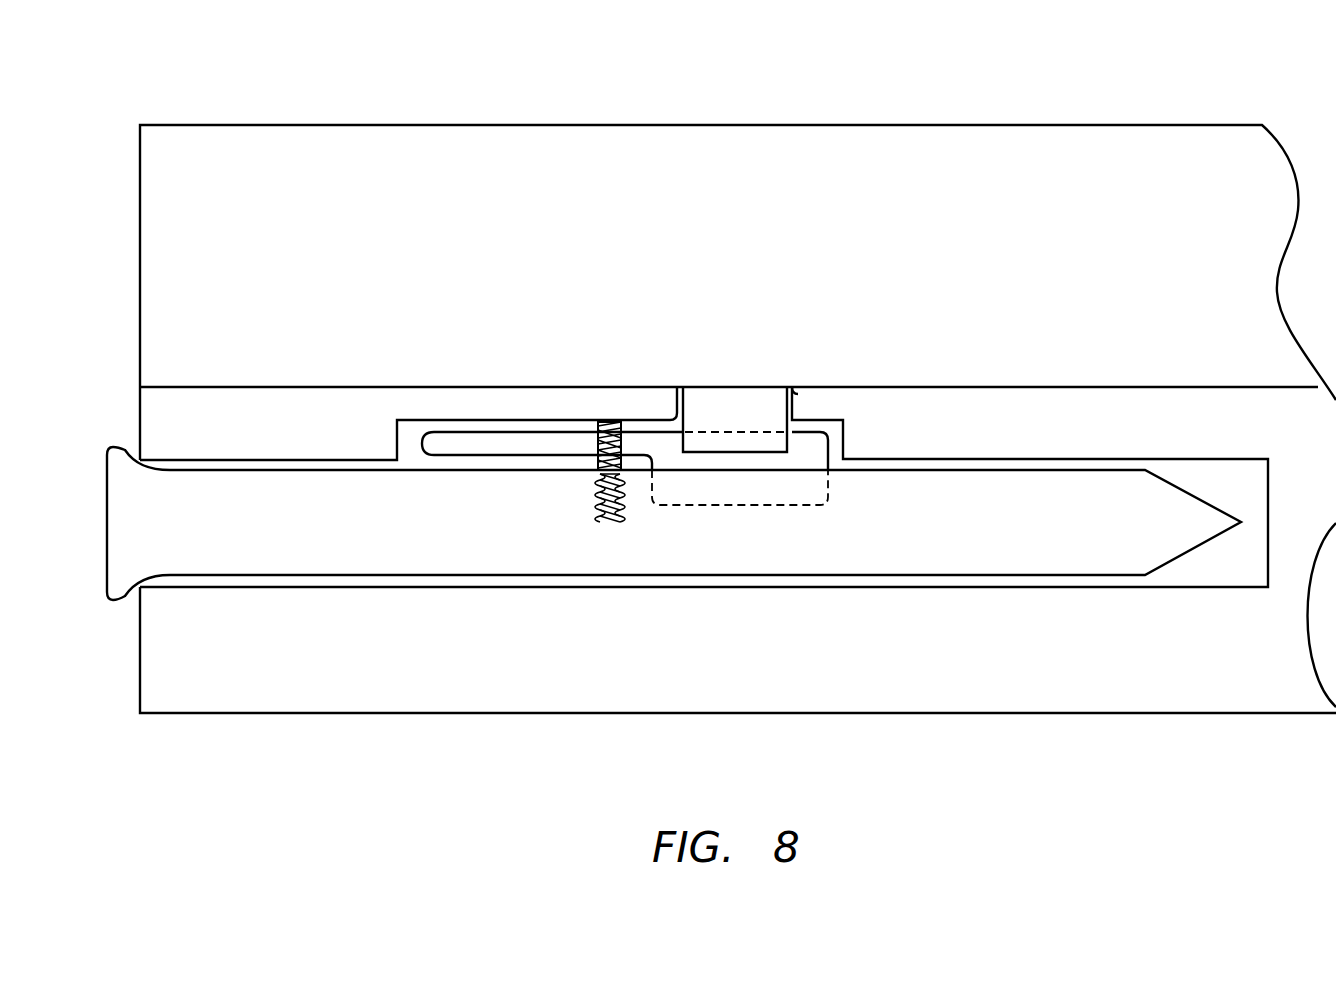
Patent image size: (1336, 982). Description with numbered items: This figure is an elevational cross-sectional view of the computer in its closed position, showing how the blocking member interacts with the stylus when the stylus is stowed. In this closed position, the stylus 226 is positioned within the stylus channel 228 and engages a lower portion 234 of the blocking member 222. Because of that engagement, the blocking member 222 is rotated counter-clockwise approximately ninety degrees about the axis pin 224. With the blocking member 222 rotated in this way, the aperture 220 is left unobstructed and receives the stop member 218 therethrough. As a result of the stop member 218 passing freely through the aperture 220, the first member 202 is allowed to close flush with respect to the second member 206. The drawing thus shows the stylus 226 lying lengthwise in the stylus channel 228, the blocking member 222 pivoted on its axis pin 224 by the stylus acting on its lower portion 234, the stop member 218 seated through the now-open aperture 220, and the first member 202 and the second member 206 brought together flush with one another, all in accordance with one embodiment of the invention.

The first member 202 is at (378, 124).
The second member 206 is at (373, 717).
The stop member 218 is at (745, 410).
The aperture 220 is at (790, 387).
The blocking member 222 is at (497, 443).
The axis pin 224 is at (610, 422).
The stylus 226 is at (895, 545).
The stylus channel 228 is at (173, 583).
The lower portion 234 is at (742, 493).